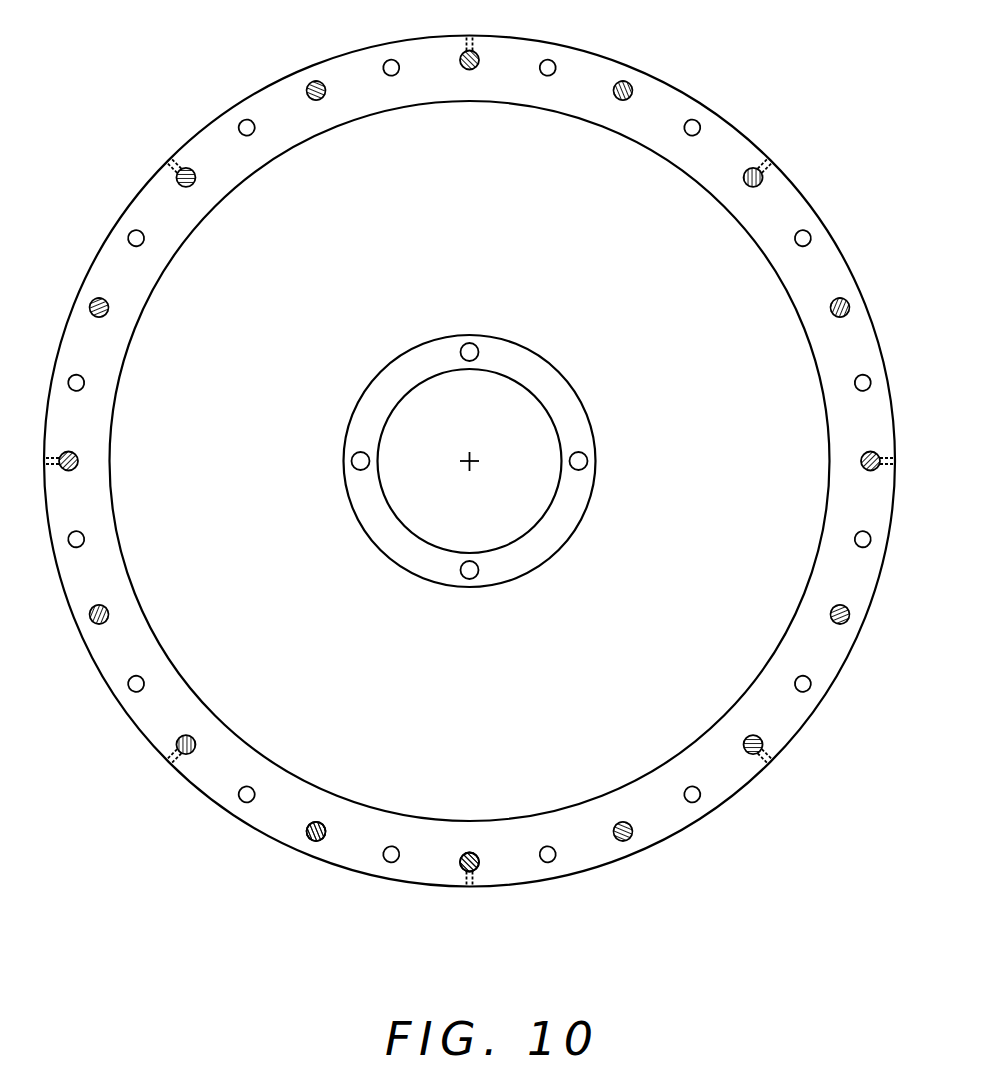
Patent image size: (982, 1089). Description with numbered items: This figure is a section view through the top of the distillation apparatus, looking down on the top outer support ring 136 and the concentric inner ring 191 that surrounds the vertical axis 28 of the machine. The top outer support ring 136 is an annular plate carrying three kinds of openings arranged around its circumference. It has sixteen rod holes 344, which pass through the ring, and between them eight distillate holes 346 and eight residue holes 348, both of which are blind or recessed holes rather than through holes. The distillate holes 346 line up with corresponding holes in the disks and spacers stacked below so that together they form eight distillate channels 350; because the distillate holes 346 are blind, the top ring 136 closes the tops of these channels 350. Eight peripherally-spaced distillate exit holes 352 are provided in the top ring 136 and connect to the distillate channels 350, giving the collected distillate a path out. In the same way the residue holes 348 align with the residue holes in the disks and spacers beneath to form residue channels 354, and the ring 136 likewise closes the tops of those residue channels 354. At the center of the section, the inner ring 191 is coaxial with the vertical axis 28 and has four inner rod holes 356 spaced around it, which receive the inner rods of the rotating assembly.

The top outer support ring 136 is at (230, 811).
The inner ring 191 is at (378, 548).
The inner rod holes 356 is at (468, 579).
The vertical axis 28 is at (481, 451).
The rod holes 344 is at (391, 862).
The distillate holes 346 is at (478, 864).
The residue holes 348 is at (311, 840).
The distillate channels 350 is at (469, 854).
The distillate exit holes 352 is at (470, 877).
The residue channels 354 is at (317, 825).